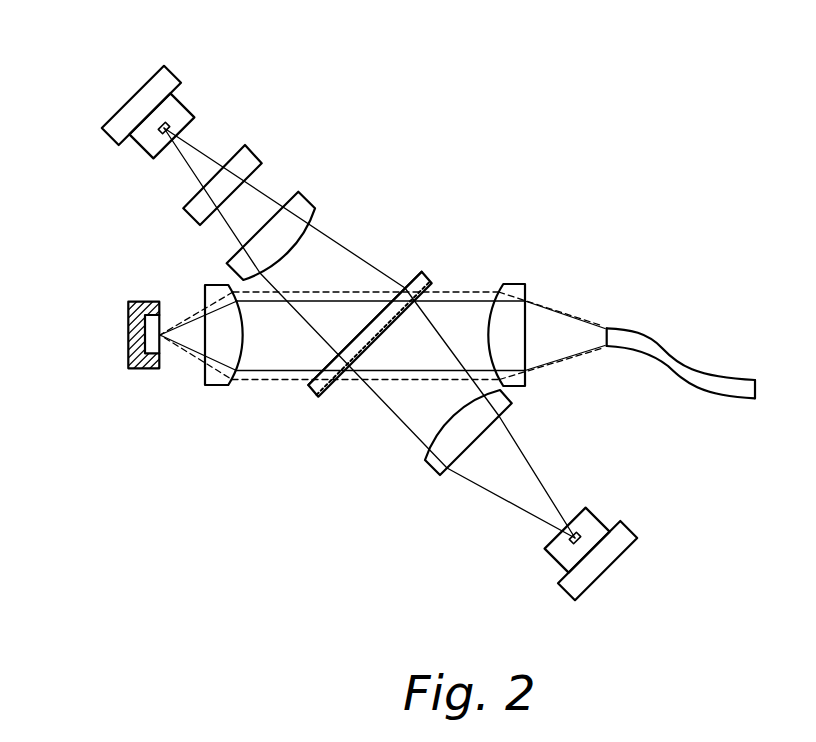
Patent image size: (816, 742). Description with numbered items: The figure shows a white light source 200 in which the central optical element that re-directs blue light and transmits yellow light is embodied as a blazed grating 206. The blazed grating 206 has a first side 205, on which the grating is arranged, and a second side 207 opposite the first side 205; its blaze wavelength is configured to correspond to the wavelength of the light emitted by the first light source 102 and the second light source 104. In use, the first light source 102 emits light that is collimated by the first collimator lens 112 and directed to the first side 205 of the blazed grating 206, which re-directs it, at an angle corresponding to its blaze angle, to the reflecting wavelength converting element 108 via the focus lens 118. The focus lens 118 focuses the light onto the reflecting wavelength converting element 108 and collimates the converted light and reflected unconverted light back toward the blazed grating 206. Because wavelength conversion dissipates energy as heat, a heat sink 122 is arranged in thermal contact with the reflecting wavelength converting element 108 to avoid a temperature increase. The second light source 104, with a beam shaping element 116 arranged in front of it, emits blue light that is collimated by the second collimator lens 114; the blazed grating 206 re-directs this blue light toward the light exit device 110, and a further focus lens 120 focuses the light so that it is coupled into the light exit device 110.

The first light source 102 is at (602, 578).
The second light source 104 is at (128, 100).
The reflecting wavelength converting element 108 is at (168, 312).
The light exit device 110 is at (667, 335).
The first collimator lens 112 is at (440, 472).
The second collimator lens 114 is at (312, 194).
The beam shaping element 116 is at (256, 150).
The focus lens 118 is at (216, 386).
The focus lens 120 is at (518, 282).
The heat sink 122 is at (133, 302).
The white light source 200 is at (600, 104).
The first side 205 is at (390, 340).
The blazed grating 206 is at (314, 391).
The second side 207 is at (360, 316).